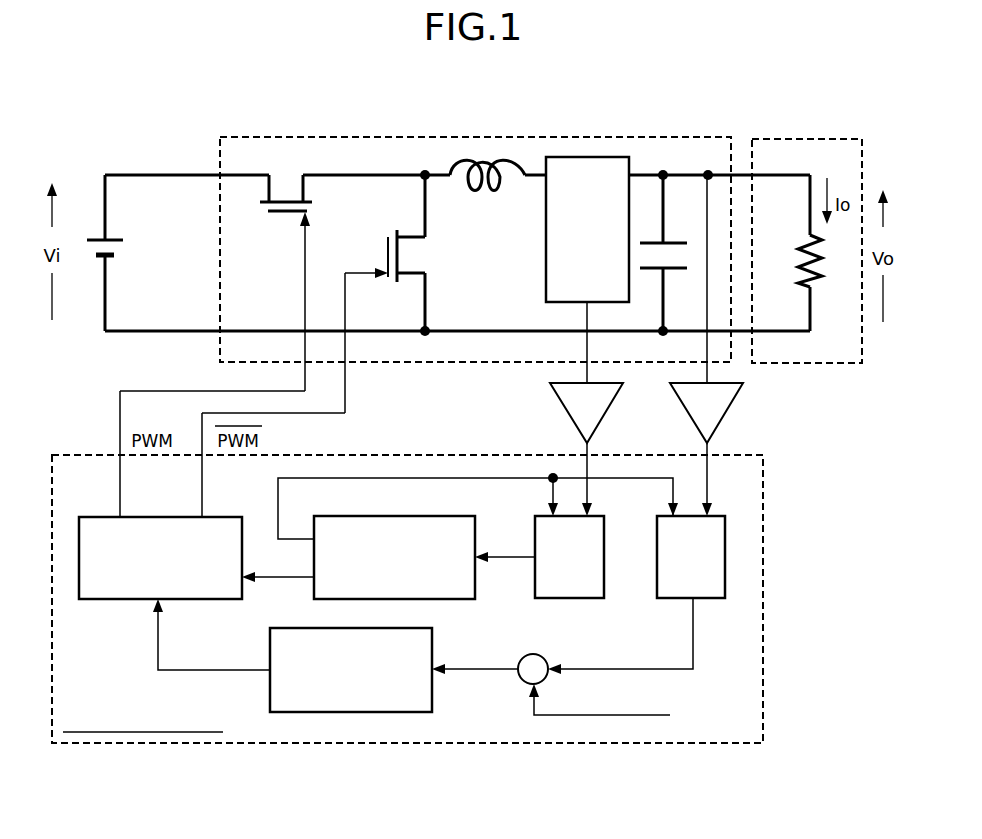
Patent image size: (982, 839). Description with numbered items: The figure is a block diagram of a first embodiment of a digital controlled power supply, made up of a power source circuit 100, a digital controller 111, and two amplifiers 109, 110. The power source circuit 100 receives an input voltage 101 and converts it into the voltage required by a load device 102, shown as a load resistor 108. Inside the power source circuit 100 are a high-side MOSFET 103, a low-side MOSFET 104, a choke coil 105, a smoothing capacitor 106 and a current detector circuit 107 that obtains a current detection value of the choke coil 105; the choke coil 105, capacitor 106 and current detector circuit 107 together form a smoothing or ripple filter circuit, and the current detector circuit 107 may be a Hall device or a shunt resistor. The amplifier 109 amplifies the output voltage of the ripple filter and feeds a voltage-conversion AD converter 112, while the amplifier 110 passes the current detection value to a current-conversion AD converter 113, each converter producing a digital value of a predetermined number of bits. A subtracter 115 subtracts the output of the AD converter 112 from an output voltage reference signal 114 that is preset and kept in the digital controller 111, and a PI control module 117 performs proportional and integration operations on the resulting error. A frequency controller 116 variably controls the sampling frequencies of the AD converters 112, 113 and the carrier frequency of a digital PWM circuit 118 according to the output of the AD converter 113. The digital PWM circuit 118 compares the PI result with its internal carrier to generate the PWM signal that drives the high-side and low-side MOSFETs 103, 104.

The power source circuit 100 is at (332, 137).
The input voltage 101 is at (112, 232).
The load device 102 is at (792, 139).
The high-side MOSFET 103 is at (278, 217).
The low-side MOSFET 104 is at (430, 273).
The choke coil 105 is at (513, 150).
The smoothing capacitor 106 is at (670, 237).
The current detector circuit 107 is at (585, 155).
The load resistor RL 108 is at (815, 285).
The amplifier 109 is at (733, 411).
The amplifier 110 is at (558, 411).
The digital controller 111 is at (380, 455).
The voltage-conversion AD converter 112 is at (673, 600).
The current-conversion AD converter 113 is at (553, 600).
The output voltage reference signal 114 is at (702, 698).
The subtracter 115 is at (518, 682).
The frequency controller 116 is at (440, 516).
The PI control module 117 is at (430, 637).
The digital PWM circuit 118 is at (125, 600).